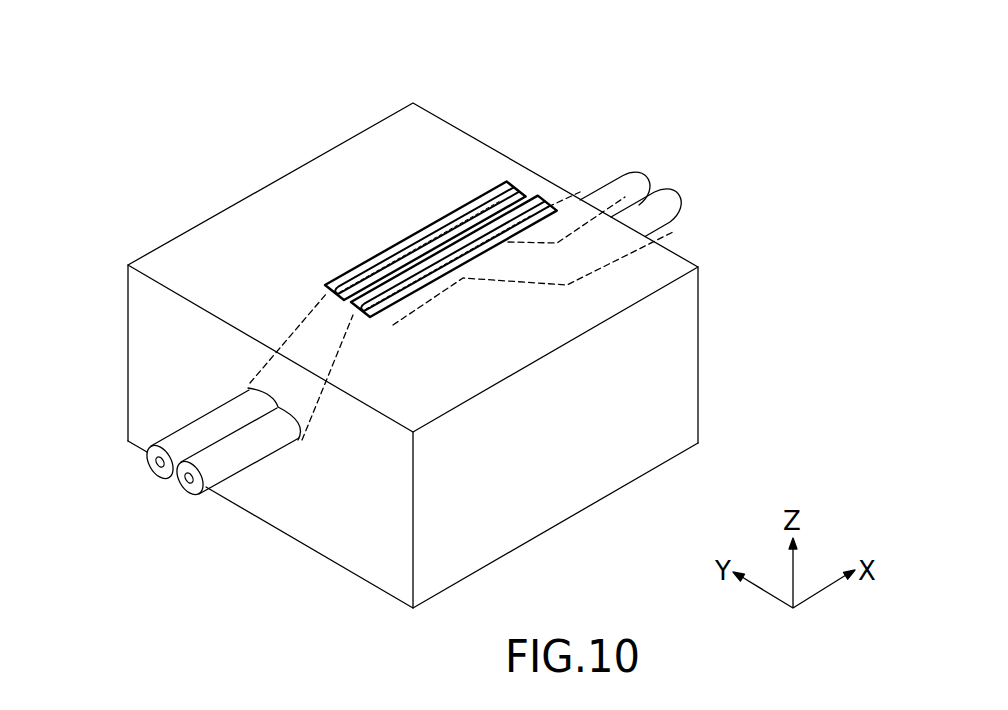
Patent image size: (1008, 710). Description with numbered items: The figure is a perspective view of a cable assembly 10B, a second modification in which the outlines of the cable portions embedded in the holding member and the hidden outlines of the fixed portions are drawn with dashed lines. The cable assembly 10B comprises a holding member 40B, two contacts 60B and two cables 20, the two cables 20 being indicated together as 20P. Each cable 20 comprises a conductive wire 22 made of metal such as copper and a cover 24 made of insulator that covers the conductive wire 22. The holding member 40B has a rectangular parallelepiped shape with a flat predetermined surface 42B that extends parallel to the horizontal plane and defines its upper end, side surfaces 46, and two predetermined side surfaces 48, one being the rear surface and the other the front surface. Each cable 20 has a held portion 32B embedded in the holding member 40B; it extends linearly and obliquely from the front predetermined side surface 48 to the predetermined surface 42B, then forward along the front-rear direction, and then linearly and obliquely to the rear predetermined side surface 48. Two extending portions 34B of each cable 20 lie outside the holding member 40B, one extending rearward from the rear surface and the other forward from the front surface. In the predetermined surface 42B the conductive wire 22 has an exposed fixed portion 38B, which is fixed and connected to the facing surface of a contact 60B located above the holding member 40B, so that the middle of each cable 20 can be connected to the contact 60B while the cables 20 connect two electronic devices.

The cable assembly 10B is at (269, 52).
The holding member 40B is at (127, 266).
The predetermined surface 42B is at (235, 222).
The side surface 46 is at (557, 487).
The predetermined side surface 48 is at (377, 550).
The extending portion 34B is at (621, 176).
The held portion 32B is at (262, 372).
The fixed portion 38B is at (378, 256).
The contact 60B is at (505, 233).
The cover 24 is at (157, 462).
The conductive wire 22 is at (158, 467).
The cable 20 is at (164, 481).
The optical fiber pair 20P is at (157, 562).